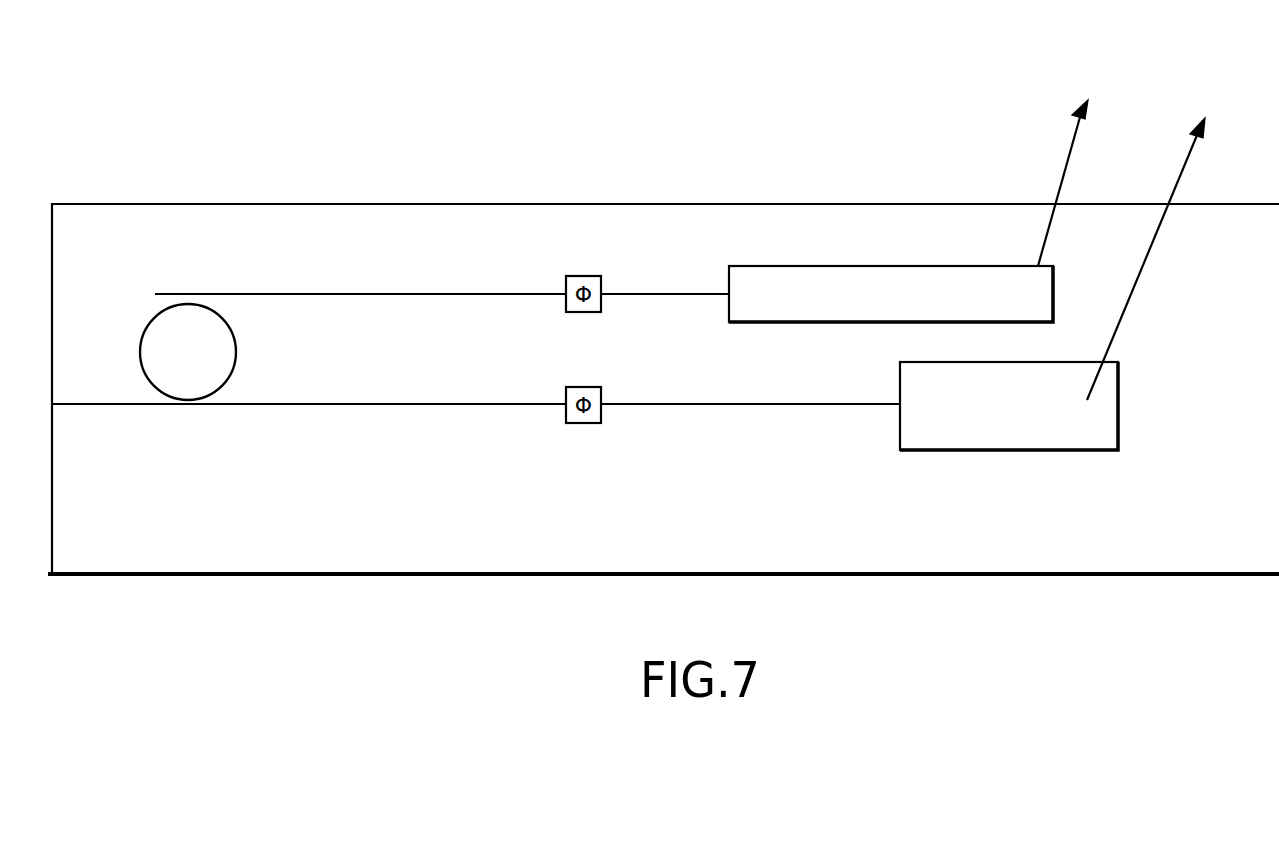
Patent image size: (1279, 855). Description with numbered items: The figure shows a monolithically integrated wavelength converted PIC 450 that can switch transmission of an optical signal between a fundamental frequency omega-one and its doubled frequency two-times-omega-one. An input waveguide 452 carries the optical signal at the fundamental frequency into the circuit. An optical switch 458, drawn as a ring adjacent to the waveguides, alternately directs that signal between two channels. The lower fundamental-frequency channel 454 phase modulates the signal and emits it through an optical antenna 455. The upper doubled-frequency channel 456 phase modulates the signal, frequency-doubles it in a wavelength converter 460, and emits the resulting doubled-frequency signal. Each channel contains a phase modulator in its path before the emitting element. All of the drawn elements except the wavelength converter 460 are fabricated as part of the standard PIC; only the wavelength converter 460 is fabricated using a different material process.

The wavelength converted PIC 450 is at (476, 86).
The input waveguide 452 is at (97, 405).
The ω1 channel 454 is at (661, 460).
The optical antenna 455 is at (945, 452).
The 2*ω1 channel 456 is at (551, 234).
The optical switch 458 is at (236, 352).
The wavelength converter 460 is at (890, 266).